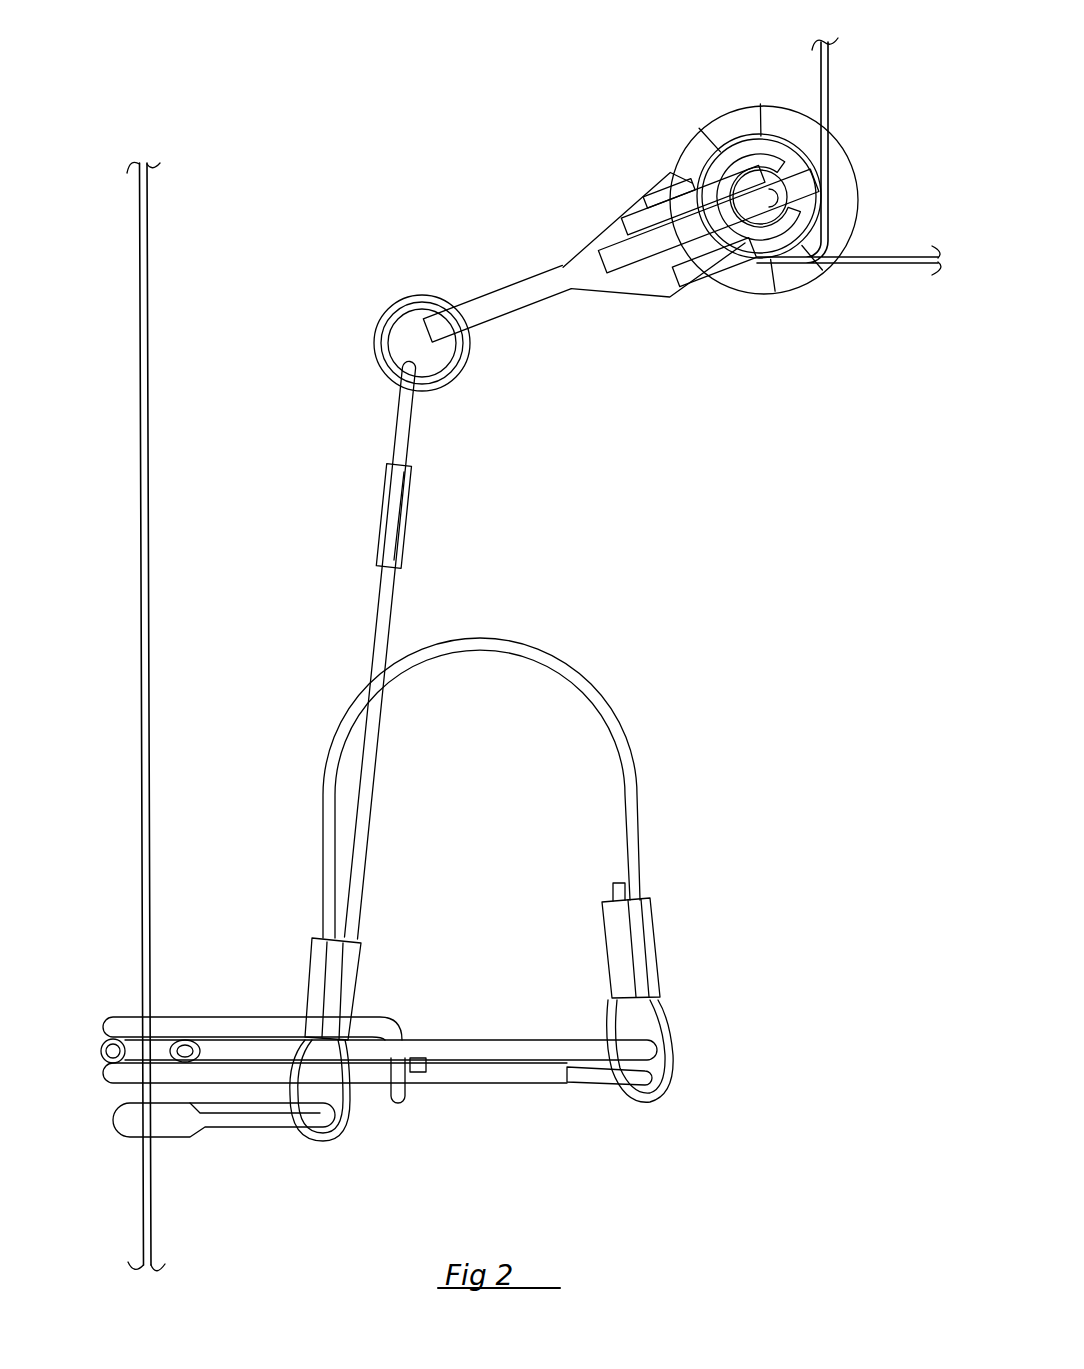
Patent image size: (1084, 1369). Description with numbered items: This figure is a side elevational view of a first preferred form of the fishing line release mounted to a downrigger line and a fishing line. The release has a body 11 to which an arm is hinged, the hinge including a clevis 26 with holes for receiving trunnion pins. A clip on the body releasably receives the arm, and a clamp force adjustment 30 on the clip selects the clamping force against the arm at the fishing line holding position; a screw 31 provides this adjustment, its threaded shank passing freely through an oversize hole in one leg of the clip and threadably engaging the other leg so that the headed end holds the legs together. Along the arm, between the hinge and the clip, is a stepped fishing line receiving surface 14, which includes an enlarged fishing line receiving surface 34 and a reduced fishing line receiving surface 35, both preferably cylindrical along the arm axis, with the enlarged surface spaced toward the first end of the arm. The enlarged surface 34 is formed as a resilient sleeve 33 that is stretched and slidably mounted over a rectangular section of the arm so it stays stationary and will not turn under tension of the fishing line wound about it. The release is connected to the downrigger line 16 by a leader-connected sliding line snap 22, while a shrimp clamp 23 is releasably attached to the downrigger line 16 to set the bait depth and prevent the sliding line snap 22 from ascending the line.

The body 11 is at (499, 323).
The stepped fishing line receiving surface 14 is at (769, 300).
The downrigger line 16 is at (148, 592).
The sliding line snap 22 is at (245, 1130).
The shrimp clamp 23 is at (239, 1012).
The clevis 26 is at (625, 207).
The clamp force adjustment 30 is at (703, 290).
The screw 31 is at (692, 293).
The resilient sleeve 33 is at (820, 252).
The enlarged fishing line receiving surface 34 is at (739, 148).
The reduced fishing line receiving surface 35 is at (778, 183).